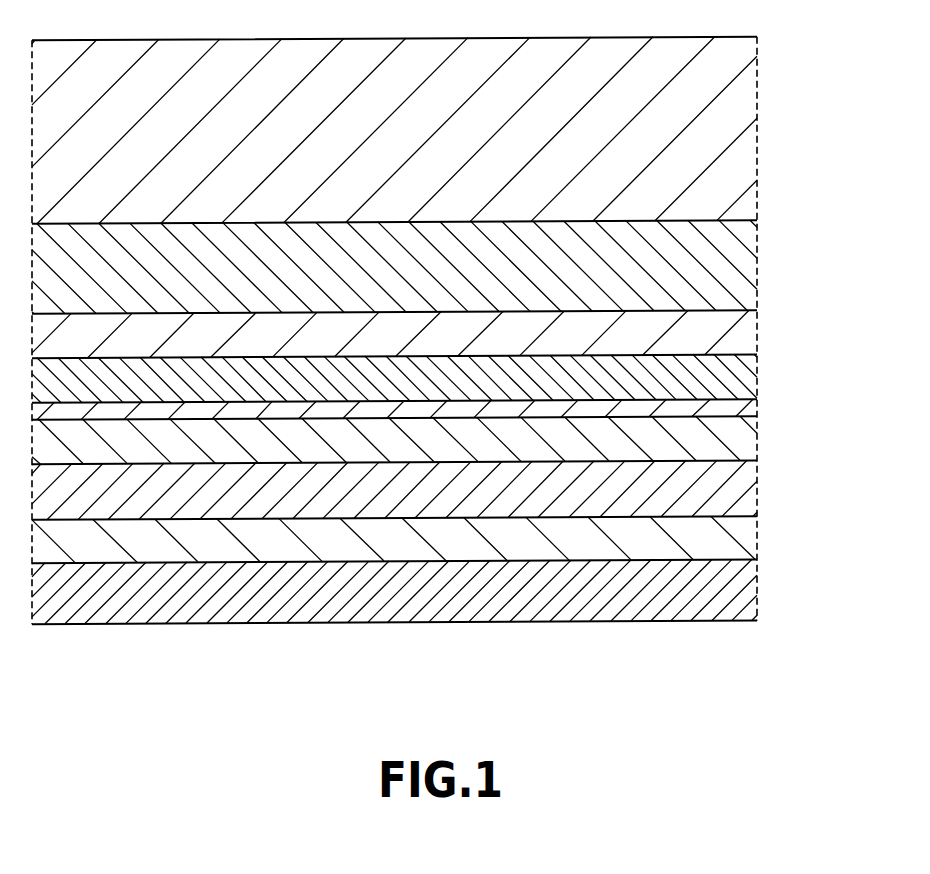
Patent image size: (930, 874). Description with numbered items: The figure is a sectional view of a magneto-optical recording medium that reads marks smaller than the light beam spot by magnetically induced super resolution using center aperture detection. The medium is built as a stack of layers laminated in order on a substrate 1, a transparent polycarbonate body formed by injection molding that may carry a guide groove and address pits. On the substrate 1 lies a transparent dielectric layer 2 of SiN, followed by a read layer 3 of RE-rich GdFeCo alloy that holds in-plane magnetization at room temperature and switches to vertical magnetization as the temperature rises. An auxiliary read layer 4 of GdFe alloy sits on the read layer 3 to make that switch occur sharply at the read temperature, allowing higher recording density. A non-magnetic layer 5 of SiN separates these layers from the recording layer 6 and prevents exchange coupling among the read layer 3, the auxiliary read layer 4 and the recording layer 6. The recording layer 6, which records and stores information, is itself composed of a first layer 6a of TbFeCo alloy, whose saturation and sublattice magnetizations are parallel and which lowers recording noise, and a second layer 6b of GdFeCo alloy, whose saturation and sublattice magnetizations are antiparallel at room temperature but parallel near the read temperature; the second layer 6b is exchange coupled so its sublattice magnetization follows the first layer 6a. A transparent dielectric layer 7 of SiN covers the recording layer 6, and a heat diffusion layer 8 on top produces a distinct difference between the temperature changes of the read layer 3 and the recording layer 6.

The substrate 1 is at (737, 108).
The transparent dielectric layer 2 is at (741, 271).
The read layer 3 is at (741, 332).
The auxiliary read layer 4 is at (741, 381).
The non-magnetic layer 5 is at (741, 407).
The recording layer 6 is at (454, 468).
The first layer 6a is at (435, 490).
The second layer 6b is at (741, 443).
The transparent dielectric layer 7 is at (741, 541).
The heat diffusion layer 8 is at (741, 596).